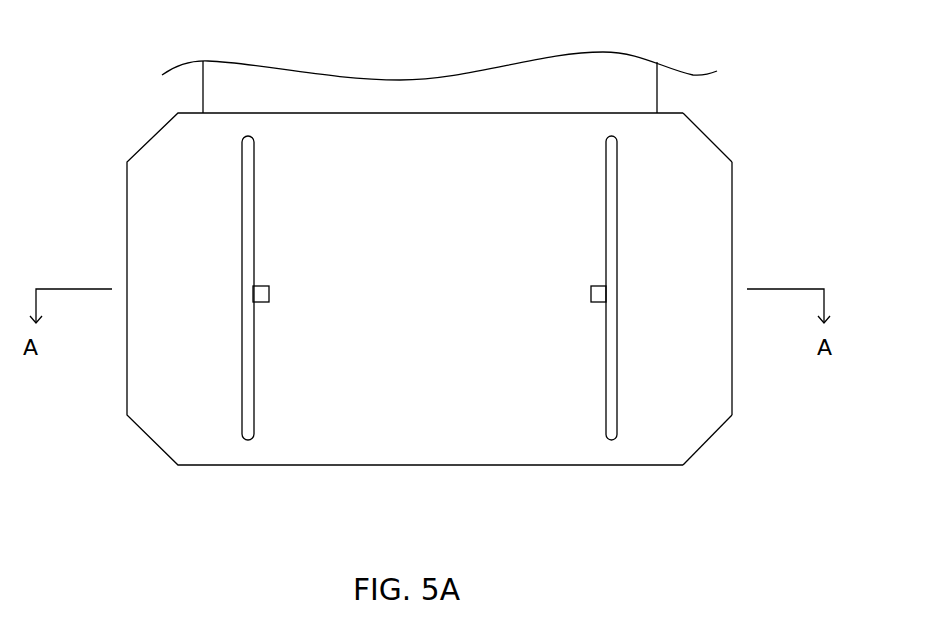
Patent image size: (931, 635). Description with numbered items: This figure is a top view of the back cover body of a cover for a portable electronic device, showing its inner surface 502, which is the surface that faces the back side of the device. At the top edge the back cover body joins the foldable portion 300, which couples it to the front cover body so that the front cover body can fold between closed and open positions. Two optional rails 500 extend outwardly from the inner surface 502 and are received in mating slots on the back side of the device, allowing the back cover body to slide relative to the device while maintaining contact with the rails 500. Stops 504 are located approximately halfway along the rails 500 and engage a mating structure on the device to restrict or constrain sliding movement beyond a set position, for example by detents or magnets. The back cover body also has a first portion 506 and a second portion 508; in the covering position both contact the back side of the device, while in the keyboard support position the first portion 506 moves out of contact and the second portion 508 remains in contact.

The foldable portion 300 is at (228, 87).
The inner surface 502 is at (447, 258).
The rails 500 is at (253, 417).
The stops 504 is at (602, 292).
The first portion 506 is at (672, 168).
The second portion 508 is at (684, 410).